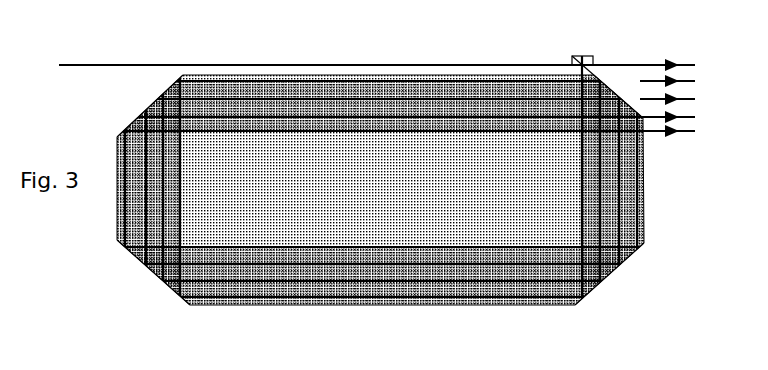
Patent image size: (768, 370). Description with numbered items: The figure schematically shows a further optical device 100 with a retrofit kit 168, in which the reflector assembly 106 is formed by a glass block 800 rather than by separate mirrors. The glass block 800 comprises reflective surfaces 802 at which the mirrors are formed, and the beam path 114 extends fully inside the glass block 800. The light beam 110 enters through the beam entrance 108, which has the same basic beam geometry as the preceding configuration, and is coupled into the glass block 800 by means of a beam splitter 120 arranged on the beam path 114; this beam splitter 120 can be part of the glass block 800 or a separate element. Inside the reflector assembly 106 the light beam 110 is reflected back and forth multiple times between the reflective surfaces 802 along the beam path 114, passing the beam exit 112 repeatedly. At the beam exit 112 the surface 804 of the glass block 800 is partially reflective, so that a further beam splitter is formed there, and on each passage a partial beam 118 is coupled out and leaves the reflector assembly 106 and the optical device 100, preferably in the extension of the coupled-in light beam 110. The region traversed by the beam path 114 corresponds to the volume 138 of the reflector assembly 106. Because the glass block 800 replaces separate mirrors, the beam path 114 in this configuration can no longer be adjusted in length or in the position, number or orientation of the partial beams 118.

The optical device 100 is at (325, 192).
The reflector assembly 106 is at (325, 192).
The retrofit kit 168 is at (100, 268).
The light beam 110 is at (178, 65).
The reflective surfaces 802 is at (157, 100).
The partial beam 118 is at (697, 63).
The beam entrance 108 is at (567, 51).
The beam splitter 120 is at (591, 78).
The beam exit 112 is at (627, 84).
The partially transmitting surface 804 is at (608, 80).
The volume 138 is at (241, 184).
The beam path 114 is at (383, 148).
The glass block 800 is at (422, 238).